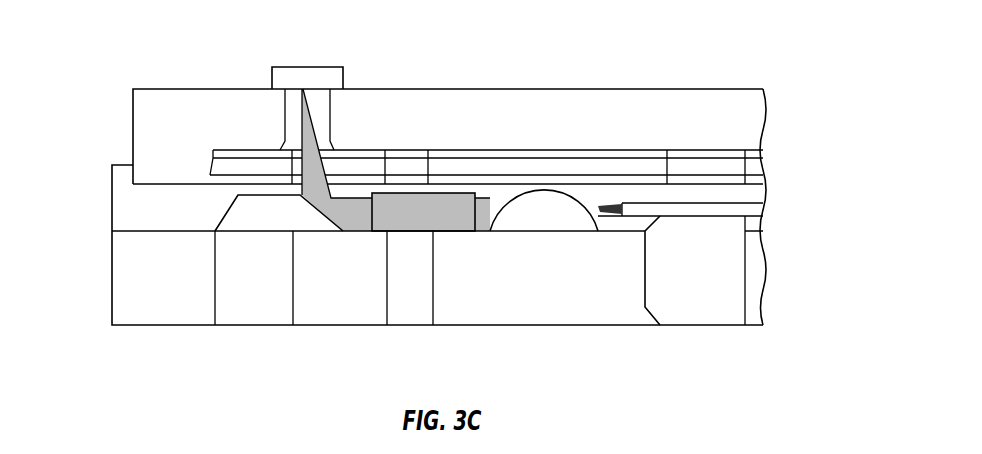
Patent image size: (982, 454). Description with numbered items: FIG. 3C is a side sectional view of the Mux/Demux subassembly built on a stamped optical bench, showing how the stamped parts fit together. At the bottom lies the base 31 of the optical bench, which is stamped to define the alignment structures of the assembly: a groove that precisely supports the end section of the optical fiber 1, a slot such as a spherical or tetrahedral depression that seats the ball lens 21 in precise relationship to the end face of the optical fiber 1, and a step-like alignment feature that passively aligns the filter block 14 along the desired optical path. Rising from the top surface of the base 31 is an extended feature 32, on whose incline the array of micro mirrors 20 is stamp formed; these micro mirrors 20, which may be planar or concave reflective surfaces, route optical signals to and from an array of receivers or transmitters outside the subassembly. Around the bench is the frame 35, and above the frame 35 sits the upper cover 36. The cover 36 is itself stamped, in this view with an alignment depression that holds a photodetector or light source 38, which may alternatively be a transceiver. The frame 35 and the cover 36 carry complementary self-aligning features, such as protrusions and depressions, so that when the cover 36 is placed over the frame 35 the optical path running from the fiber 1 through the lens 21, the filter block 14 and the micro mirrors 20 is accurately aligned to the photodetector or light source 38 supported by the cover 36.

The optical fiber 1 is at (713, 208).
The filter block 14 is at (412, 193).
The micro mirrors 20 is at (318, 213).
The ball lens 21 is at (567, 205).
The base 31 is at (528, 295).
The extended feature 32 is at (243, 218).
The frame 35 is at (768, 266).
The upper cover 36 is at (502, 107).
The photodetector/light source 38 is at (305, 80).